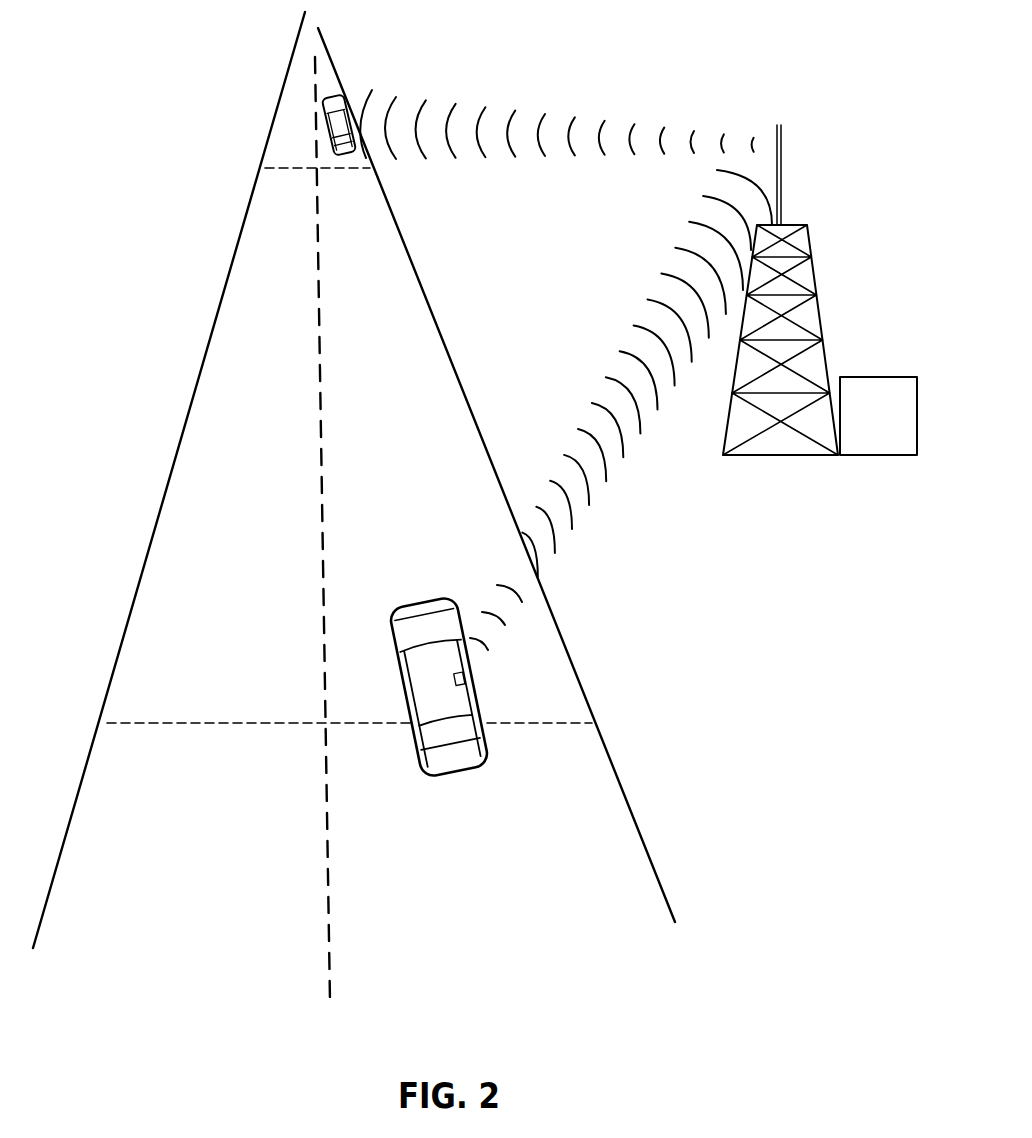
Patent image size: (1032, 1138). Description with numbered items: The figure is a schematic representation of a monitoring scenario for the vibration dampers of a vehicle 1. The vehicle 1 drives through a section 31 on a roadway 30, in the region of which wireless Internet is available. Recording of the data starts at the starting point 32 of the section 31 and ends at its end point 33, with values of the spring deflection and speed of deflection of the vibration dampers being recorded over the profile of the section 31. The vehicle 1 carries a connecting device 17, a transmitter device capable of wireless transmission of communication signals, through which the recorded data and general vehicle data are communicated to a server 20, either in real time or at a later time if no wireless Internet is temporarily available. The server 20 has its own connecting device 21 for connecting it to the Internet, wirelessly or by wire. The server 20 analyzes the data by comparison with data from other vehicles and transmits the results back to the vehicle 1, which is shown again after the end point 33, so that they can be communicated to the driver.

The vehicle 1 is at (338, 90).
The connecting device 17 is at (470, 670).
The server 20 is at (883, 443).
The connecting device 21 is at (805, 278).
The roadway 30 is at (170, 385).
The section 31 is at (452, 418).
The starting point 32 is at (110, 722).
The end point 33 is at (277, 167).